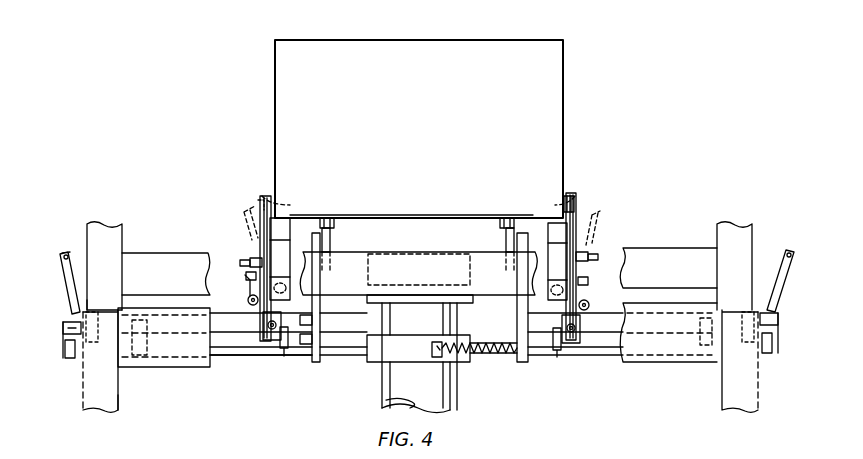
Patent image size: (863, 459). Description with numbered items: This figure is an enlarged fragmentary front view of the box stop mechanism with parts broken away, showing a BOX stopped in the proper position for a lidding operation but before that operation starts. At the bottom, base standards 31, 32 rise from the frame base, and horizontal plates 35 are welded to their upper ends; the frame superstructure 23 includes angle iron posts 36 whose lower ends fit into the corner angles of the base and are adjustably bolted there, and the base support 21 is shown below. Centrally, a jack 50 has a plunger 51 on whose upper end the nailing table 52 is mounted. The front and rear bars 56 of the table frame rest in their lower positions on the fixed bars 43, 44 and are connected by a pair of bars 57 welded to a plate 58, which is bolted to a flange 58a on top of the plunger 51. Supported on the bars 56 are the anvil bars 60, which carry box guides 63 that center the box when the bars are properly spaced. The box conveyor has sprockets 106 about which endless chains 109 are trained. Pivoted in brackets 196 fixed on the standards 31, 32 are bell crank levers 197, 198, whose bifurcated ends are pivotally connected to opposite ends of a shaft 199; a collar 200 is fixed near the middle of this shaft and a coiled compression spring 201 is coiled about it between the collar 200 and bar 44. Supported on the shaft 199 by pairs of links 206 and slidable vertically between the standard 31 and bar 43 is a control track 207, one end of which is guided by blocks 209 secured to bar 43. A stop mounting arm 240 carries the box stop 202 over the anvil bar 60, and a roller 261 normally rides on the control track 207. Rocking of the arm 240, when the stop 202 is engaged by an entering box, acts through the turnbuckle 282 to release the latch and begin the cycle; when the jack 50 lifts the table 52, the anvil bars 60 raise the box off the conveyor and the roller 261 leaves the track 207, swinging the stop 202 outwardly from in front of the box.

The support base 21 is at (120, 400).
The frame superstructure 23 is at (124, 244).
The base standard 31 is at (85, 380).
The base standard 32 is at (752, 390).
The horizontal plate 35 is at (185, 368).
The angle iron post 36 is at (104, 226).
The fixed bar 43 is at (321, 300).
The fixed bar 44 is at (518, 300).
The jack 50 is at (465, 385).
The plunger 51 is at (372, 308).
The nailing table 52 is at (196, 254).
The front and rear bars 56 is at (455, 310).
The bar 57 is at (416, 256).
The plate 58 is at (380, 270).
The flange 58a is at (378, 297).
The anvil bar 60 is at (290, 240).
The box guide 63 is at (578, 212).
The sprocket 106 is at (332, 243).
The endless chain 109 is at (332, 220).
The bracket 196 is at (62, 333).
The bell crank lever 197 is at (60, 255).
The bell crank lever 198 is at (790, 252).
The shaft 199 is at (238, 356).
The collar 200 is at (435, 357).
The coiled compression spring 201 is at (490, 344).
The box stop 202 is at (262, 196).
The link 206 is at (142, 358).
The control track 207 is at (240, 318).
The block 209 is at (286, 350).
The stop mounting arm 240 is at (246, 212).
The roller 261 is at (247, 298).
The turnbuckle 282 is at (258, 268).
The box BOX is at (419, 129).